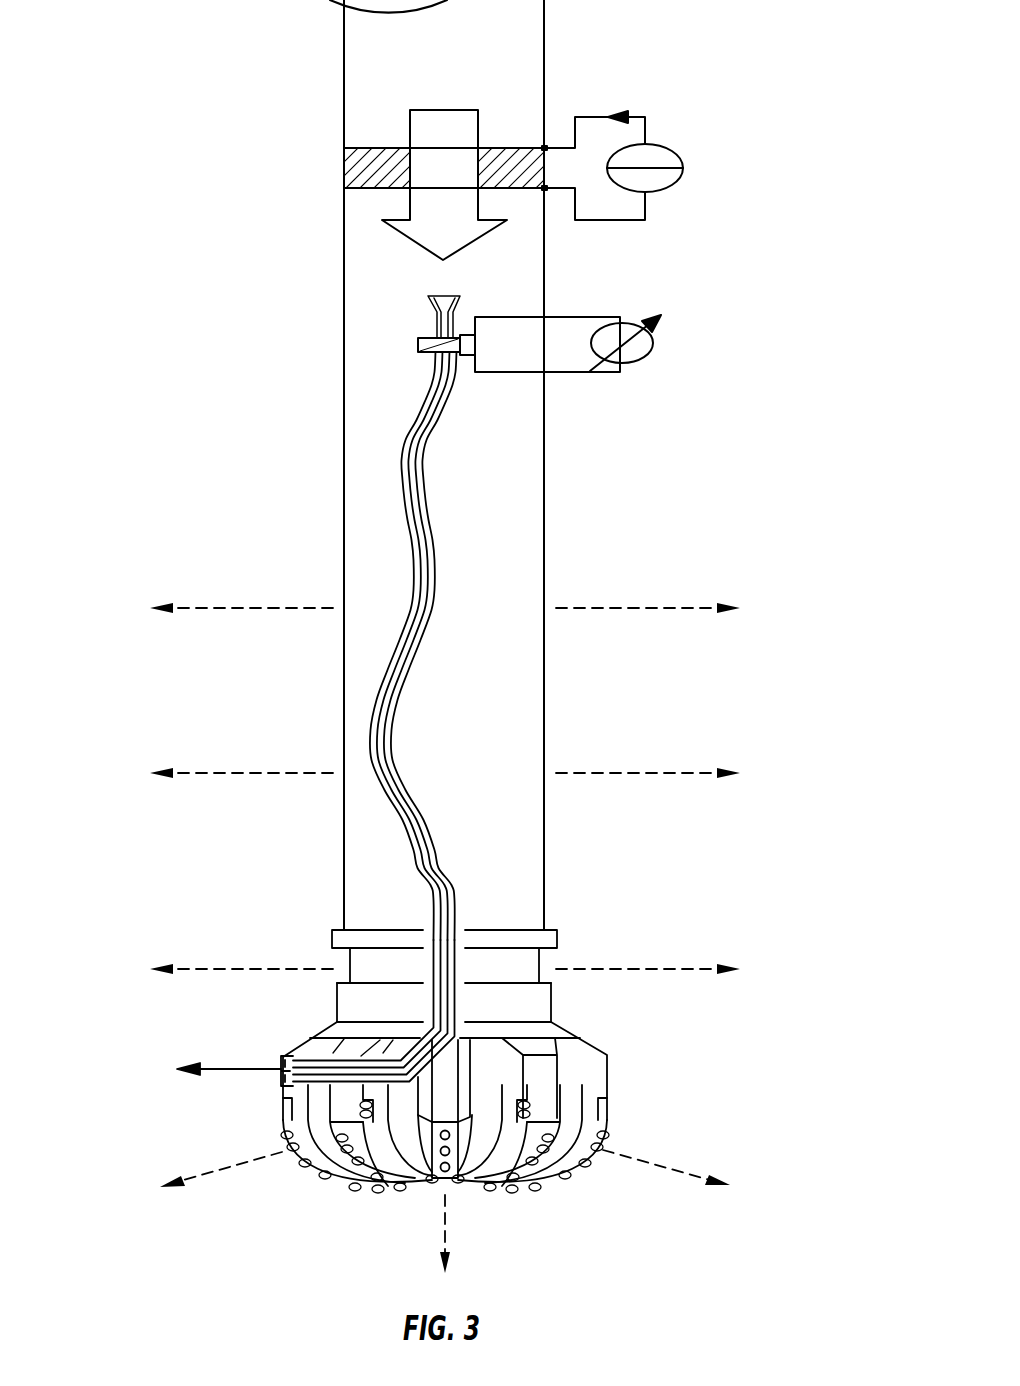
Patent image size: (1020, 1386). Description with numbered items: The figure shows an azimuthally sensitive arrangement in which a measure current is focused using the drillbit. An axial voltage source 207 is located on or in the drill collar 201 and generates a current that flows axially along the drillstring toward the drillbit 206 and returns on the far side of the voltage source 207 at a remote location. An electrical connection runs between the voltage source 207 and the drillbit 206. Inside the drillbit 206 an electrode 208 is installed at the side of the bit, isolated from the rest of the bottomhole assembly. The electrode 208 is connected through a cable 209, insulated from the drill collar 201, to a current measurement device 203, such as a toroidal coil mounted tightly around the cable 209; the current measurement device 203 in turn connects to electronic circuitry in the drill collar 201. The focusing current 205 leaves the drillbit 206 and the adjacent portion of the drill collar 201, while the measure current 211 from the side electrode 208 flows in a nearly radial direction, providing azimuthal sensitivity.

The drill collar 201 is at (344, 62).
The axial voltage source 207 is at (344, 165).
The current measurement device 203 is at (632, 365).
The cable 209 is at (426, 489).
The focusing current 205 is at (447, 932).
The drillbit 206 is at (593, 1078).
The electrode 208 is at (281, 1062).
The measure current 211 is at (226, 1070).